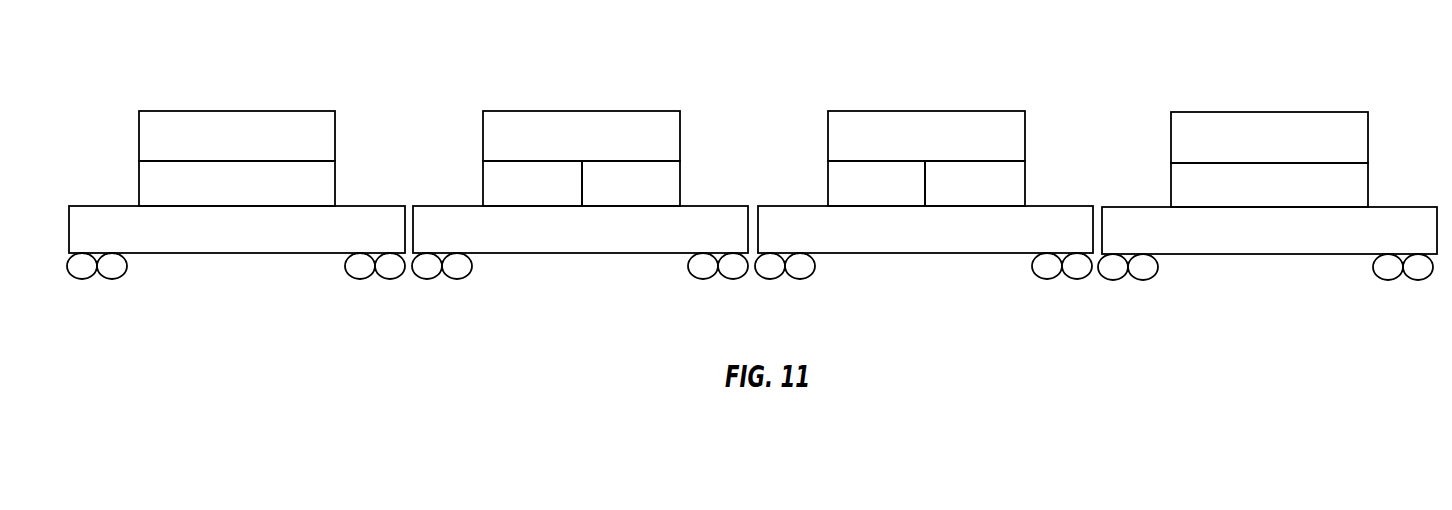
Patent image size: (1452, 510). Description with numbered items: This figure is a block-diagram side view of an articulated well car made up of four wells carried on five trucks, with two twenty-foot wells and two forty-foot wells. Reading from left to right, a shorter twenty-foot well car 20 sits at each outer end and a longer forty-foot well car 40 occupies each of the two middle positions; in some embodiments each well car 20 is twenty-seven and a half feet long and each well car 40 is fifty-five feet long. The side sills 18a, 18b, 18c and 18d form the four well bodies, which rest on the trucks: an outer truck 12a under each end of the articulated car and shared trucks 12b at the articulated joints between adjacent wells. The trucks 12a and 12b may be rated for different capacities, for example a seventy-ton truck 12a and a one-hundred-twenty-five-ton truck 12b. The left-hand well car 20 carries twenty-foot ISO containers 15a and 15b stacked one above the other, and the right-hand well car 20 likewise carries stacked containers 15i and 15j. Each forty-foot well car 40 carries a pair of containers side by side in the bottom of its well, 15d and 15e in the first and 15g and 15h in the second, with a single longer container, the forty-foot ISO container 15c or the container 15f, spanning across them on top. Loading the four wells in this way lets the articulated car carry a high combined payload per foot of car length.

The truck 12a is at (97, 283).
The truck 12b is at (409, 282).
The twenty-foot ISO container 15a is at (260, 150).
The twenty-foot ISO container 15b is at (258, 196).
The forty-foot ISO container 15c is at (603, 150).
The container 15d is at (554, 196).
The container 15e is at (653, 196).
The container 15f is at (945, 150).
The container 15g is at (900, 196).
The container 15h is at (997, 196).
The container 15i is at (1290, 151).
The container 15j is at (1288, 197).
The vehicle platform 18a is at (155, 243).
The vehicle platform 18b is at (498, 243).
The vehicle platform 18c is at (843, 243).
The vehicle platform 18d is at (1187, 244).
The twenty-foot well car 20 is at (753, 133).
The forty-foot well car 40 is at (754, 133).